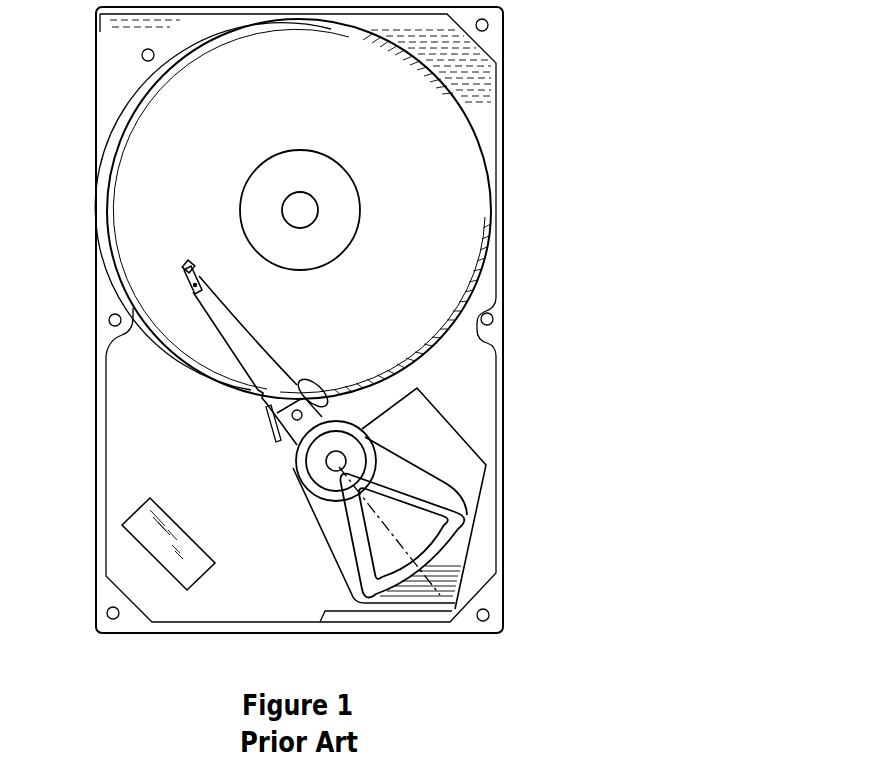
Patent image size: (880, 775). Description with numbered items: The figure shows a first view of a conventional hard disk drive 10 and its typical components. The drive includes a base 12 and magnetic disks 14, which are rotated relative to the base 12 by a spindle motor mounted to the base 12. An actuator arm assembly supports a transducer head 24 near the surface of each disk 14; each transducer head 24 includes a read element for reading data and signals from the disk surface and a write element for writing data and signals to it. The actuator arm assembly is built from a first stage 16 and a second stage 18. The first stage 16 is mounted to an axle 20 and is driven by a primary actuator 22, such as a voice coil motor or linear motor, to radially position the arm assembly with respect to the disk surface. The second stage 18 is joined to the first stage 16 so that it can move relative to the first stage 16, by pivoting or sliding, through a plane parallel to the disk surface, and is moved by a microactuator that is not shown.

The disk drive 10 is at (724, 268).
The base 12 is at (503, 426).
The magnetic disks 14 is at (472, 198).
The first stage 16 is at (250, 365).
The second stage 18 is at (185, 283).
The axle 20 is at (317, 459).
The primary actuator 22 is at (440, 521).
The transducer head 24 is at (183, 265).